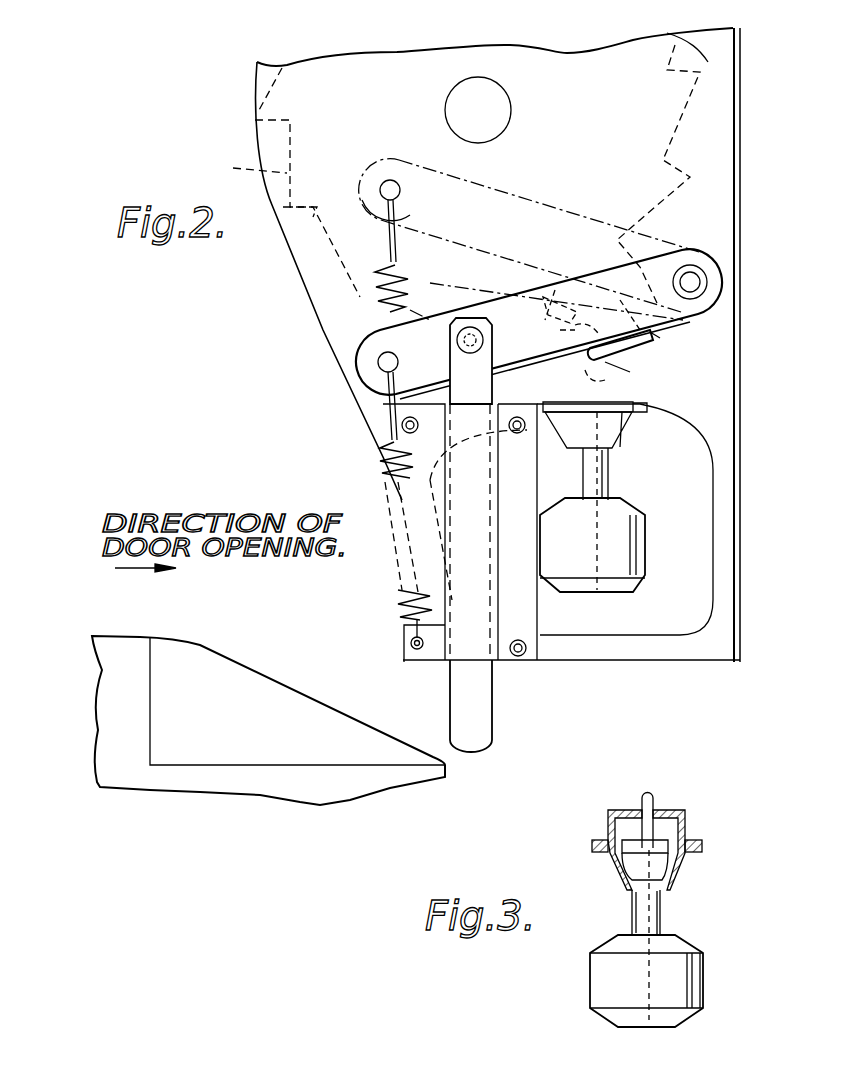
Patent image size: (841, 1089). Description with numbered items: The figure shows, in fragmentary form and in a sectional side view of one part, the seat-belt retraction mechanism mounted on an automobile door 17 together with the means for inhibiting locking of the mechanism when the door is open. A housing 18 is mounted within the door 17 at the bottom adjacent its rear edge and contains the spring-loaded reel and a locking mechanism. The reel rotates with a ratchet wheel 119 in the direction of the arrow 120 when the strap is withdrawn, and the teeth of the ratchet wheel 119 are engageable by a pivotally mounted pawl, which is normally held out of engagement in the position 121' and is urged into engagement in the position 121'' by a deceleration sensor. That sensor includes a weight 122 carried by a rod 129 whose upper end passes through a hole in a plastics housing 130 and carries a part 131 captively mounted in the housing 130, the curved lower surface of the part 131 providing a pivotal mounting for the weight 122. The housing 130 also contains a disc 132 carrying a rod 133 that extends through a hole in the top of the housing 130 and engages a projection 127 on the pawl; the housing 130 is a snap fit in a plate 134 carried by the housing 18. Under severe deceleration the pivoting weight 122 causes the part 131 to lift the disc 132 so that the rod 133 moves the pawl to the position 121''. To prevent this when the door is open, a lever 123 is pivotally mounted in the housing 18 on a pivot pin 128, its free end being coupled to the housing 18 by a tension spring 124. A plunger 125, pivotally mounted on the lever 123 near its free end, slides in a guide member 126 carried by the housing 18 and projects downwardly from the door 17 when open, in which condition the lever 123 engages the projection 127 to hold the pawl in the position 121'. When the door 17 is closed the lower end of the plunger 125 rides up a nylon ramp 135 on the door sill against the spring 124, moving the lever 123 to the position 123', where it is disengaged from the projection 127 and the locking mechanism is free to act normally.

In FIG. 2, the door 17 is at (677, 36).
In FIG. 2, the housing 18 is at (300, 268).
In FIG. 2, the ratchet wheel 119 is at (238, 159).
In FIG. 2, the arrow 120 is at (624, 125).
In FIG. 2, the pawl position (disengaged) 121' is at (605, 353).
In FIG. 2, the pawl position (engaged) 121'' is at (505, 293).
In FIG. 2, the weight 122 is at (637, 558).
In FIG. 3, the weight 122 is at (607, 997).
In FIG. 2, the lever 123 is at (320, 372).
In FIG. 2, the lever position 123' is at (392, 156).
In FIG. 2, the tension spring 124 is at (373, 283).
In FIG. 2, the plunger 125 is at (463, 381).
In FIG. 2, the guide member 126 is at (433, 662).
In FIG. 2, the projection 127 is at (650, 338).
In FIG. 2, the pivot pin 128 is at (690, 282).
In FIG. 2, the rod 129 is at (597, 487).
In FIG. 3, the rod 129 is at (638, 915).
In FIG. 2, the housing 130 is at (613, 445).
In FIG. 3, the housing 130 is at (673, 877).
In FIG. 3, the part 131 is at (633, 872).
In FIG. 3, the disc 132 is at (623, 870).
In FIG. 2, the rod 133 is at (630, 372).
In FIG. 3, the rod 133 is at (673, 780).
In FIG. 2, the plate 134 is at (633, 413).
In FIG. 3, the plate 134 is at (590, 848).
In FIG. 2, the ramp 135 is at (257, 693).